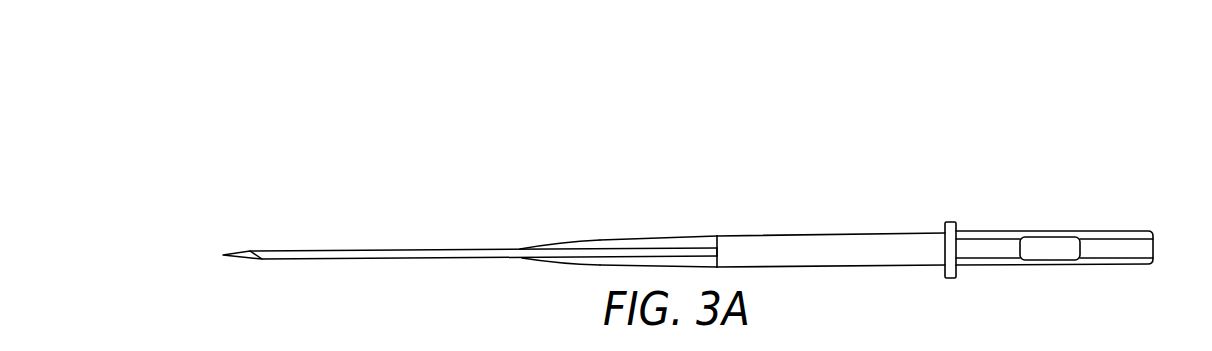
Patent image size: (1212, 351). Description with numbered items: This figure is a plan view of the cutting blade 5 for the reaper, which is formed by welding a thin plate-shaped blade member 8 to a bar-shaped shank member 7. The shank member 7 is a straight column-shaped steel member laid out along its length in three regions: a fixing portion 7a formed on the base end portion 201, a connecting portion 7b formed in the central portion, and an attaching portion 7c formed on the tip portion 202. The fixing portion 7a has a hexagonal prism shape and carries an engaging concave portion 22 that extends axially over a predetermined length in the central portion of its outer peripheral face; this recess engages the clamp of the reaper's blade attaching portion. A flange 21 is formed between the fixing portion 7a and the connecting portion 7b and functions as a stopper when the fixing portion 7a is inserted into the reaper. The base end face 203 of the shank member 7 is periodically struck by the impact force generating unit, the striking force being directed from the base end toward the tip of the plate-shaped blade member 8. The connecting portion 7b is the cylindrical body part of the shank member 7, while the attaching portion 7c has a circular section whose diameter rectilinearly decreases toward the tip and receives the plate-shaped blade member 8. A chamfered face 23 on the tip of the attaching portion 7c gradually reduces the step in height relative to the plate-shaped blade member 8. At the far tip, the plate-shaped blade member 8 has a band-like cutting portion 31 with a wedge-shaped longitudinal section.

The cutting blade 5 is at (737, 125).
The shank member 7 is at (874, 233).
The fixing portion 7a is at (1103, 231).
The connecting portion 7b is at (786, 235).
The attaching portion 7c is at (656, 237).
The plate-shaped blade member 8 is at (378, 250).
The cutting portion 31 is at (245, 251).
The flange 21 is at (951, 222).
The engaging concave portion 22 is at (1047, 247).
The chamfered face 23 is at (552, 243).
The base end portion 201 is at (1022, 185).
The tip portion 202 is at (611, 185).
The base end face 203 is at (1153, 245).